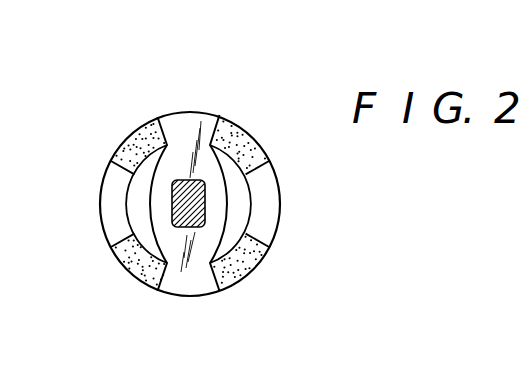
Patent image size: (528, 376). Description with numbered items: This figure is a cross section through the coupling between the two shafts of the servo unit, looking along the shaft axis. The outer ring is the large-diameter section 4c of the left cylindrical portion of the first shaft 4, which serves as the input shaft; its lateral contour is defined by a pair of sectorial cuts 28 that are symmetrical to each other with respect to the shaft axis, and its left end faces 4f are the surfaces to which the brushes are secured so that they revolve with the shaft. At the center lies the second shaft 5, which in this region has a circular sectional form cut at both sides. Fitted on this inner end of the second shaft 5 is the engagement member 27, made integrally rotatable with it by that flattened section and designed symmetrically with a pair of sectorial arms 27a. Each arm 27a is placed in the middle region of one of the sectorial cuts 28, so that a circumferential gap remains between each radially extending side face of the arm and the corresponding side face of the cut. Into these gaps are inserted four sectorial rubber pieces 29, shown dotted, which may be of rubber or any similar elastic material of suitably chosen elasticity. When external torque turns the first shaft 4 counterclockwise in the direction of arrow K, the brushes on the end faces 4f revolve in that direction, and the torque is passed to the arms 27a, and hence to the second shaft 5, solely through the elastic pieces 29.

The first shaft 4 is at (97, 164).
The large-diameter section 4c is at (101, 198).
The left end faces 4f is at (110, 212).
The second shaft 5 is at (184, 213).
The engagement member 27 is at (218, 198).
The sectorial arms 27a is at (197, 121).
The sectorial cuts 28 is at (121, 257).
The sectorial rubber pieces 29 is at (132, 143).
The direction of rotation K is at (159, 88).